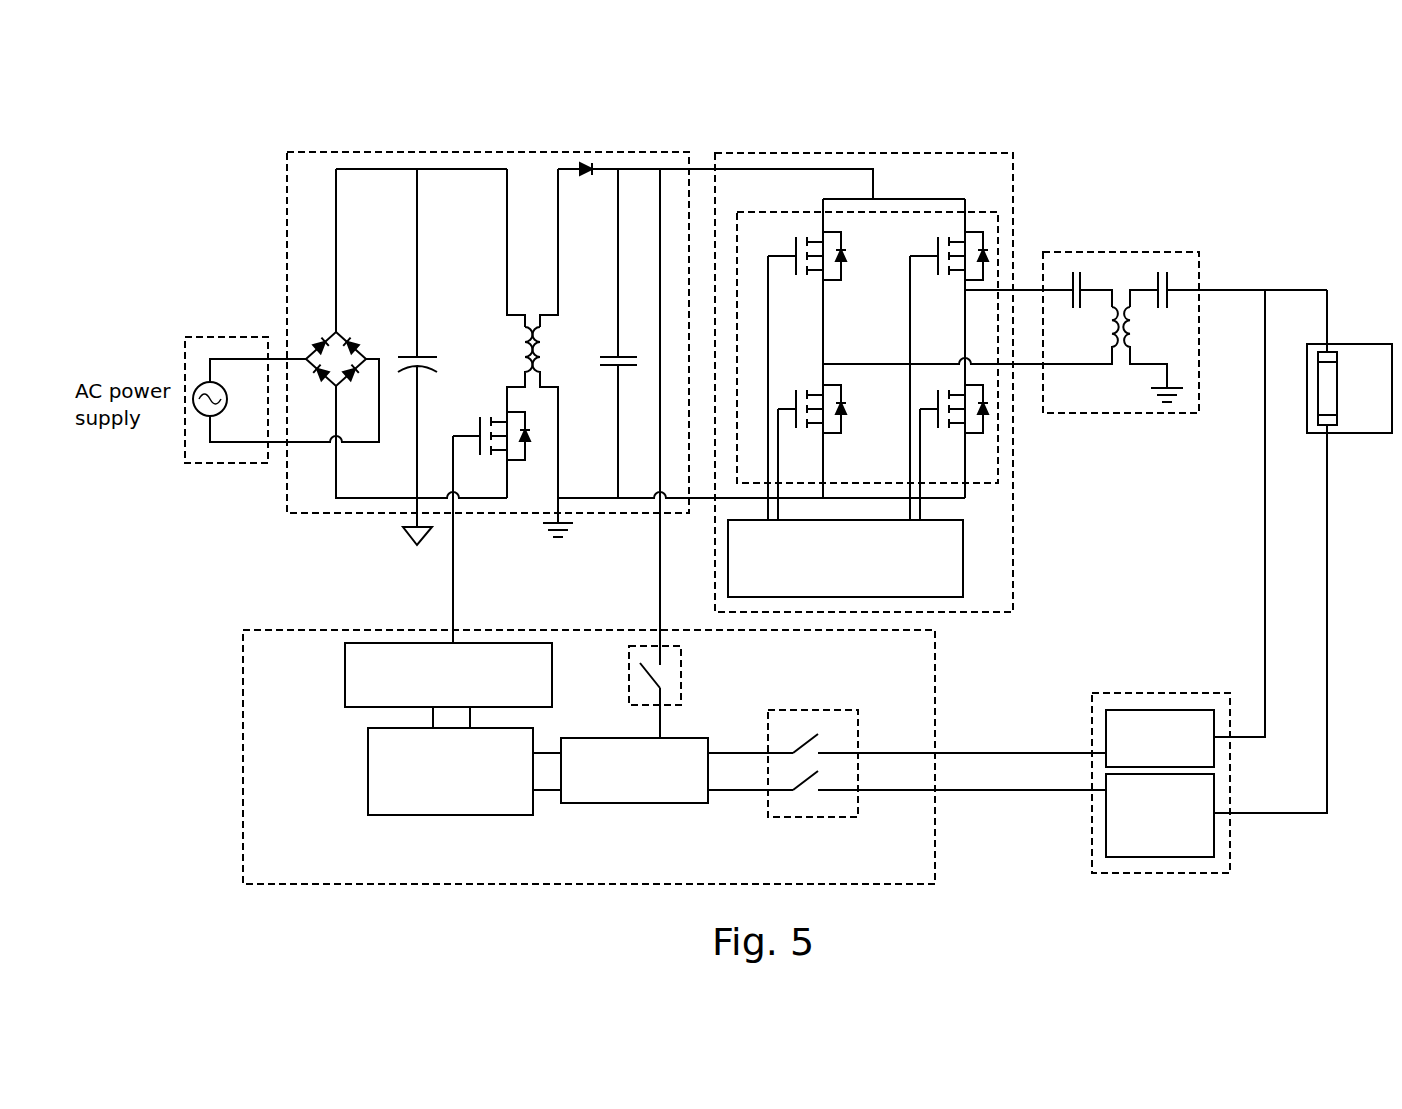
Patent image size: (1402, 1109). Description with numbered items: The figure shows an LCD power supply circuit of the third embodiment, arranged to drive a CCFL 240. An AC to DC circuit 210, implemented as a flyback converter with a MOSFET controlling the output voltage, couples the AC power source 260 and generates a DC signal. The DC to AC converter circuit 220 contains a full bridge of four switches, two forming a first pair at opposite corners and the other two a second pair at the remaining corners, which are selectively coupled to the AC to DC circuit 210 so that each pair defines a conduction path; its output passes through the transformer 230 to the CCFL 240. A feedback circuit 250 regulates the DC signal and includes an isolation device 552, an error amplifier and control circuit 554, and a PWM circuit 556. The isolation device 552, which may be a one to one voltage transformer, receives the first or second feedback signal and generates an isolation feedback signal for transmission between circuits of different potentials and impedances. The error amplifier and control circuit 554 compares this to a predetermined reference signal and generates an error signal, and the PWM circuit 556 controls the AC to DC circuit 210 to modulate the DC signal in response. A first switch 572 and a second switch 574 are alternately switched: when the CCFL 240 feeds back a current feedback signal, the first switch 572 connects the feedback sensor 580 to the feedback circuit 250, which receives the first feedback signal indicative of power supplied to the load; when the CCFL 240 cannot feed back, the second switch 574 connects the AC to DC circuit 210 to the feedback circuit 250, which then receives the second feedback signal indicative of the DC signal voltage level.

The AC to DC circuit 210 is at (480, 152).
The DC to AC converter circuit 220 is at (808, 153).
The transformer 230 is at (1120, 252).
The CCFL 240 is at (1350, 344).
The feedback circuit 250 is at (549, 757).
The AC power source 260 is at (225, 337).
The isolation device 552 is at (633, 803).
The error amplifier and control circuit 554 is at (460, 815).
The PWM circuit 556 is at (345, 676).
The first switch 572 is at (820, 817).
The second switch 574 is at (681, 675).
The feedback sensor 580 is at (1160, 693).